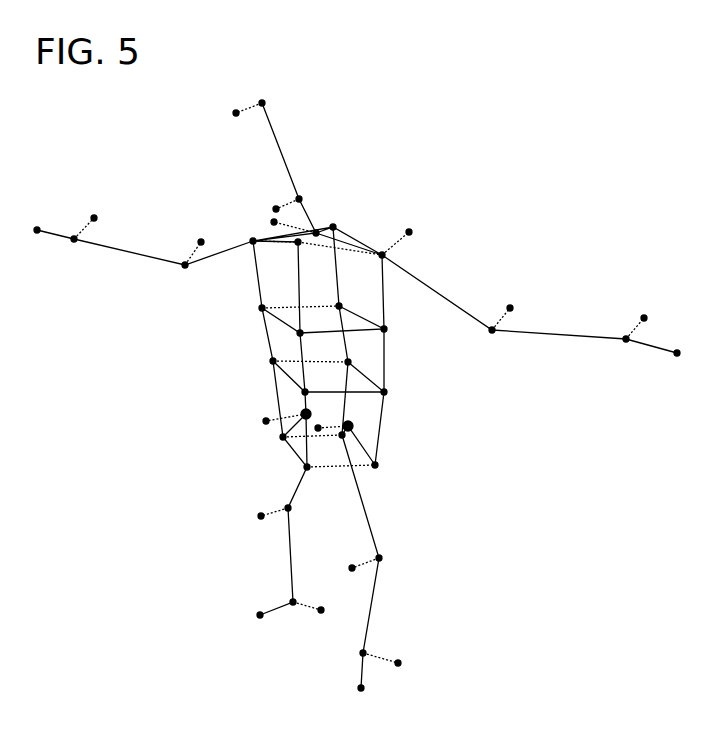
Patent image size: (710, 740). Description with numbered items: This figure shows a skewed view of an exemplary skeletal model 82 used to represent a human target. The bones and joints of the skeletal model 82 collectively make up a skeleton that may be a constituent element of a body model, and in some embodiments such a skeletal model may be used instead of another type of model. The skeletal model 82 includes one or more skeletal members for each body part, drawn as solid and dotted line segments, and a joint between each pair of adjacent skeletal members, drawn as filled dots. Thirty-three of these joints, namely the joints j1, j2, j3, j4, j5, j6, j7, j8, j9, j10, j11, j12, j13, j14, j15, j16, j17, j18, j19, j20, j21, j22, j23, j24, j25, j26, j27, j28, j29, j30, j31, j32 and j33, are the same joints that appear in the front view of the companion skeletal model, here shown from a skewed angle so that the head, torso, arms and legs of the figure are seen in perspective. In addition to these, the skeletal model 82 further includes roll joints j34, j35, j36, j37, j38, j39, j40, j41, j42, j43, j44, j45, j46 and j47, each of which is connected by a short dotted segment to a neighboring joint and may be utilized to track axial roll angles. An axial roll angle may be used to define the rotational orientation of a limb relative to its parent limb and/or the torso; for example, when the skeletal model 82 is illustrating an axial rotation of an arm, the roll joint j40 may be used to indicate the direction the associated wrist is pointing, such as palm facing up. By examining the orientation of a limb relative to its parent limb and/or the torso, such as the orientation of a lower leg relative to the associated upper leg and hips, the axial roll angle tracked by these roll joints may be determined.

The skeletal model 82 is at (430, 88).
The joint j1 is at (250, 247).
The joint j2 is at (388, 254).
The joint j3 is at (301, 248).
The joint j4 is at (339, 226).
The joint j5 is at (257, 307).
The joint j6 is at (390, 327).
The joint j7 is at (304, 329).
The joint j8 is at (343, 302).
The joint j9 is at (268, 360).
The joint j10 is at (390, 390).
The joint j11 is at (309, 388).
The joint j12 is at (354, 360).
The joint j13 is at (278, 439).
The joint j14 is at (381, 463).
The joint j15 is at (302, 470).
The joint j16 is at (338, 441).
The joint j17 is at (180, 268).
The joint j18 is at (496, 337).
The joint j19 is at (72, 245).
The joint j20 is at (624, 346).
The joint j21 is at (38, 224).
The joint j22 is at (675, 360).
The joint j23 is at (294, 506).
The joint j24 is at (385, 556).
The joint j25 is at (288, 600).
The joint j26 is at (358, 655).
The joint j27 is at (255, 618).
The joint j28 is at (367, 687).
The joint j29 is at (299, 408).
The joint j30 is at (356, 426).
The joint j31 is at (320, 229).
The joint j32 is at (303, 193).
The joint j33 is at (268, 100).
The roll joint j34 is at (273, 204).
The roll joint j35 is at (230, 111).
The roll joint j36 is at (268, 221).
The roll joint j37 is at (414, 229).
The roll joint j38 is at (196, 241).
The roll joint j39 is at (514, 305).
The roll joint j40 is at (100, 216).
The roll joint j41 is at (648, 314).
The roll joint j42 is at (261, 420).
The roll joint j43 is at (322, 424).
The roll joint j44 is at (256, 515).
The roll joint j45 is at (352, 562).
The roll joint j46 is at (319, 616).
The roll joint j47 is at (404, 661).